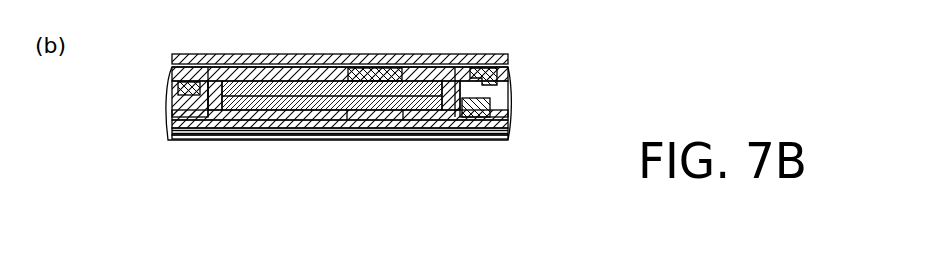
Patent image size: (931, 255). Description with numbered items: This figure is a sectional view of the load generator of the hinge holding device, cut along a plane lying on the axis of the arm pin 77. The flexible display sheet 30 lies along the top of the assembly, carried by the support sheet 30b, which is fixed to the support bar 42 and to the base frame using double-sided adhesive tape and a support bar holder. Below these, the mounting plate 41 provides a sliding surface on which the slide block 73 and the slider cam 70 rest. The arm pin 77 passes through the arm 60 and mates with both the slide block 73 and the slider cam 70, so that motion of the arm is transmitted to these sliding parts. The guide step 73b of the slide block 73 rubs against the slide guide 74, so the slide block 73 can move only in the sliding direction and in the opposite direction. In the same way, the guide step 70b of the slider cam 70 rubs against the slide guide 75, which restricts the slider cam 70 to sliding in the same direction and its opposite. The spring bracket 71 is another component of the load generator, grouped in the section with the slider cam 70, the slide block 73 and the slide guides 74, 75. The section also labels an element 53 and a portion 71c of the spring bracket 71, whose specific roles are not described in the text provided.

The flexible display sheet 30 is at (395, 137).
The support sheet 30b is at (350, 132).
The mounting plate 41 is at (258, 125).
The support bar 42 is at (320, 55).
The terminal 53 is at (178, 80).
The arm 60 is at (385, 70).
The slider cam 70 is at (425, 68).
The guide step 70b is at (445, 108).
The spring bracket 71 is at (515, 107).
The housing inner portion 71c is at (485, 117).
The slide block 73 is at (165, 135).
The guide step 73b is at (206, 118).
The slide guide 74 is at (203, 80).
The slide guide 75 is at (495, 60).
The arm pin 77 is at (297, 112).